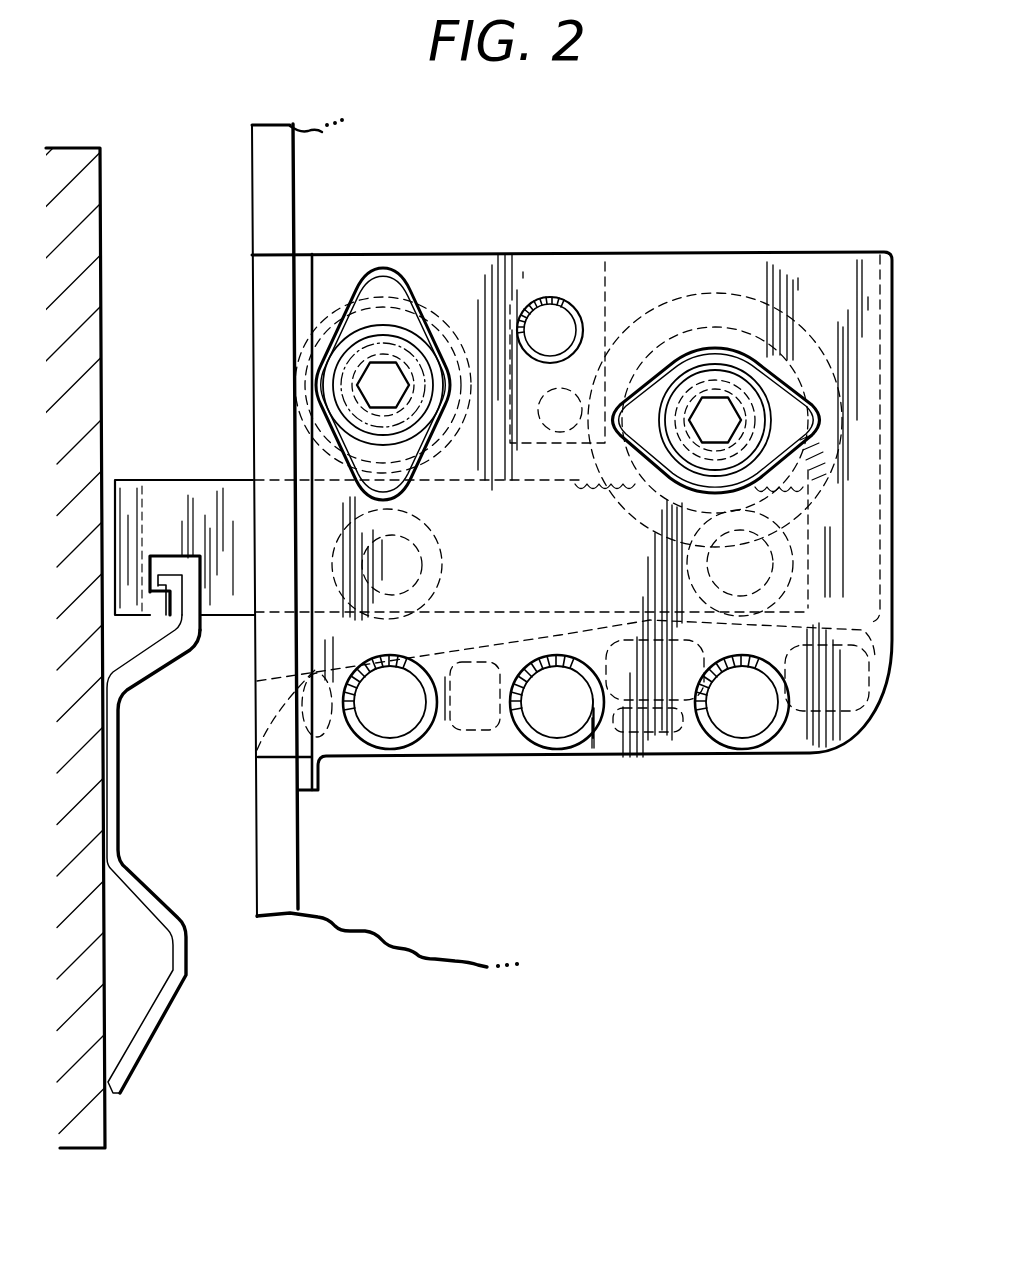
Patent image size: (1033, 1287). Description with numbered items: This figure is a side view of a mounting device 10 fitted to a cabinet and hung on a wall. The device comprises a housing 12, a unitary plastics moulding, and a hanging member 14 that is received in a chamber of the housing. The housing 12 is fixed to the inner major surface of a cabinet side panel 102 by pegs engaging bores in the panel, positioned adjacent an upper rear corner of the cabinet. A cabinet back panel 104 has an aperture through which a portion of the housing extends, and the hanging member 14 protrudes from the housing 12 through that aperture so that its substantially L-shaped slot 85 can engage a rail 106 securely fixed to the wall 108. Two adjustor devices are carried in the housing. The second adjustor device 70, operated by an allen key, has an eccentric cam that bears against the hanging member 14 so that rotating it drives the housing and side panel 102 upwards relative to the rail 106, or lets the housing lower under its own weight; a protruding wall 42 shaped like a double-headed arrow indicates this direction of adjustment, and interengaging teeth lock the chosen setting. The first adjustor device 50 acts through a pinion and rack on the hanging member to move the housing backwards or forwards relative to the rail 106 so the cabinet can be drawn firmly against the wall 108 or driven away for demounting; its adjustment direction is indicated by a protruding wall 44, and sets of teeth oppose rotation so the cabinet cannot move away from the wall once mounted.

The mounting device 10 is at (572, 448).
The housing 12 is at (830, 290).
The hanging member 14 is at (187, 493).
The protruding wall 42 is at (378, 267).
The protruding wall 44 is at (643, 377).
The first adjustor device 50 is at (707, 383).
The second adjustor device 70 is at (400, 357).
The L-shaped slot 85 is at (192, 576).
The side panel 102 is at (470, 855).
The cabinet back panel 104 is at (277, 895).
The rail 106 is at (178, 967).
The wall 108 is at (95, 1123).